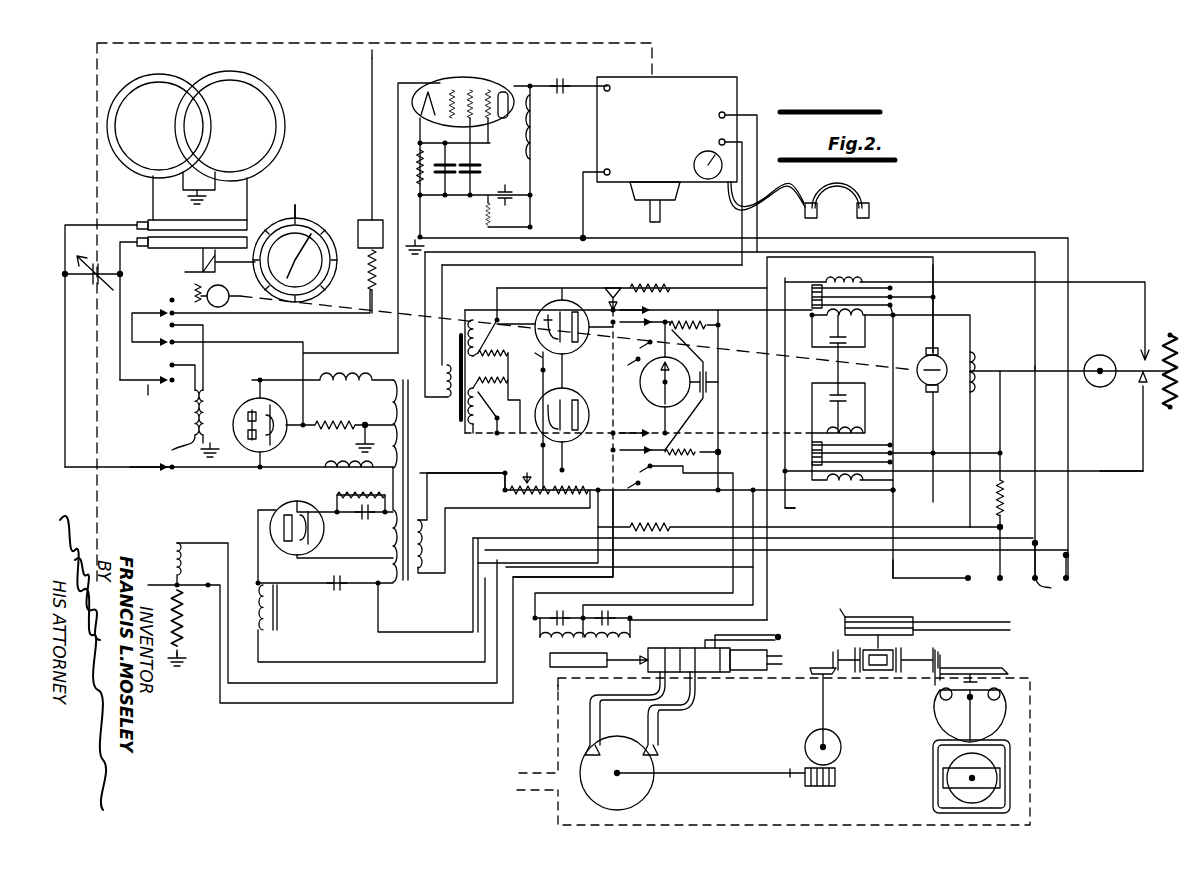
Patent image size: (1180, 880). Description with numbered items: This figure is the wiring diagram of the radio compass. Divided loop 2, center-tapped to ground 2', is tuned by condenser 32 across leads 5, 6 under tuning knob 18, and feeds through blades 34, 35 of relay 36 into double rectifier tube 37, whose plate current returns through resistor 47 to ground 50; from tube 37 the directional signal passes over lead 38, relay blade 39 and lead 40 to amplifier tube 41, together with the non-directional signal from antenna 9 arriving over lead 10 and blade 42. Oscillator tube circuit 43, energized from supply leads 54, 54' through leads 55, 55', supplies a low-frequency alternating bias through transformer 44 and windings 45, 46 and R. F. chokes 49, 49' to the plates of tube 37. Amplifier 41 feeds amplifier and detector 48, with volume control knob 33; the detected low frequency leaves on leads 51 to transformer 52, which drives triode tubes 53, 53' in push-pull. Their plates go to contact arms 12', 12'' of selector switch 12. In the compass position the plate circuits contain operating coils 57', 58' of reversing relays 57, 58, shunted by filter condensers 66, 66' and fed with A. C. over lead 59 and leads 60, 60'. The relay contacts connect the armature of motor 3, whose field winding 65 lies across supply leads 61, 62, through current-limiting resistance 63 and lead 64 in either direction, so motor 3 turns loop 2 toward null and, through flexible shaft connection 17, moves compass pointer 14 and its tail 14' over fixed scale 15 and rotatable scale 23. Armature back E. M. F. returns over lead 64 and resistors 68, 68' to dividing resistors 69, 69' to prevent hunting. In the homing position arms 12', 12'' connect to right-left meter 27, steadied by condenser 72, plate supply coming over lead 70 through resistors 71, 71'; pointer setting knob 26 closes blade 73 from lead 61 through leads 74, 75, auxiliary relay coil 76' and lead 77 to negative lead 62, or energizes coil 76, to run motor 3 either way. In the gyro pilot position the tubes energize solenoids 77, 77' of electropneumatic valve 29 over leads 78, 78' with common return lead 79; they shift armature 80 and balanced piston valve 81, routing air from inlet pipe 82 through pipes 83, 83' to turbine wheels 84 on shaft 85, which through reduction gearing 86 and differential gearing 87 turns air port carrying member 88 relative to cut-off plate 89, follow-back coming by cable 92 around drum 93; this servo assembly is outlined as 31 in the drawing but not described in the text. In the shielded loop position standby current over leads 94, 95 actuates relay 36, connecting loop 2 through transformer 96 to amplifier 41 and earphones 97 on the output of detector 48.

The loop 2 is at (196, 145).
The ground 2' is at (208, 203).
The loop drive motor 3 is at (925, 380).
The lead 5 is at (68, 430).
The lead 6 is at (118, 384).
The antenna 9 is at (361, 139).
The lead 10 is at (376, 278).
The selector switch 12 is at (638, 288).
The contact arm of selector switch 12' is at (655, 361).
The contact arm of selector switch 12'' is at (638, 447).
The compass pointer 14 is at (295, 205).
The tail portion of pointer 14' is at (577, 333).
The compass scale 15 is at (320, 232).
The flexible shaft connection 17 is at (220, 277).
The tuning knob 18 is at (638, 216).
The rotatable compass scale 23 is at (358, 281).
The pointer setting switch knob 26 is at (1070, 403).
The right-left indicator meter 27 is at (644, 401).
The electropneumatic valve 29 is at (689, 673).
The servo unit 31 is at (553, 748).
The condenser 32 is at (92, 283).
The volume control knob 33 is at (694, 166).
The relay blade 34 is at (143, 400).
The relay blade 35 is at (137, 472).
The relay 36 is at (146, 550).
The double rectifier tube 37 is at (269, 424).
The lead 38 is at (285, 371).
The relay blade 39 is at (108, 346).
The lead 40 is at (345, 350).
The amplifier tube 41 is at (463, 91).
The relay blade 42 is at (147, 380).
The oscillator tube circuit 43 is at (312, 561).
The transformer 44 is at (496, 480).
The transformer winding 45 is at (397, 413).
The transformer winding 46 is at (384, 524).
The resistor 47 is at (348, 439).
The amplifier and detector 48 is at (737, 85).
The R. F. choke 49 is at (322, 369).
The R. F. choke 49' is at (335, 478).
The ground 50 is at (373, 443).
The leads 51 is at (747, 172).
The transformer 52 is at (472, 344).
The triode tube 53 is at (632, 338).
The triode tube 53' is at (562, 421).
The D. C. supply lead 54 is at (1067, 562).
The D. C. supply lead 54' is at (1018, 595).
The connecting lead 55 is at (893, 573).
The connecting lead 55' is at (969, 529).
The reversing relay 57 is at (859, 316).
The relay operating coil 57' is at (890, 416).
The reversing relay 58 is at (962, 459).
The relay operating coil 58' is at (857, 434).
The lead 59 is at (658, 504).
The lead 60 is at (697, 391).
The lead 60' is at (705, 452).
The D. C. supply lead 61 is at (998, 570).
The D. C. supply lead 62 is at (908, 588).
The current limiting resistance 63 is at (1012, 474).
The lead 64 is at (932, 486).
The field winding 65 is at (970, 353).
The condenser 66 is at (835, 349).
The condenser 66' is at (841, 398).
The resistor 68 is at (662, 280).
The resistor 68' is at (784, 516).
The dividing resistor 69 is at (492, 347).
The dividing resistor 69' is at (491, 371).
The lead 70 is at (733, 485).
The resistor 71 is at (714, 327).
The resistor 71' is at (694, 390).
The condenser 72 is at (722, 382).
The switch blade 73 is at (1134, 385).
The lead 74 is at (1044, 382).
The lead 75 is at (1128, 487).
The auxiliary relay coil 76 is at (967, 311).
The auxiliary relay coil 76' is at (852, 484).
The solenoid 77 is at (671, 591).
The solenoid 77' is at (600, 626).
The lead 78 is at (753, 585).
The lead 78' is at (713, 603).
The common return lead 79 is at (726, 563).
The armature 80 is at (549, 694).
The balanced piston valve 81 is at (752, 684).
The inlet pipe 82 is at (758, 636).
The pipe 83 is at (625, 713).
The pipe 83' is at (683, 713).
The turbine wheels 84 is at (617, 773).
The shaft 85 is at (711, 787).
The reduction gearing 86 is at (832, 727).
The differential gearing 87 is at (881, 686).
The air port carrying member 88 is at (1006, 696).
The cut-off plate 89 is at (932, 730).
The cable 92 is at (952, 620).
The drum 93 is at (876, 613).
The lead 94 is at (415, 703).
The lead 95 is at (337, 610).
The transformer 96 is at (195, 429).
The earphones 97 is at (837, 200).